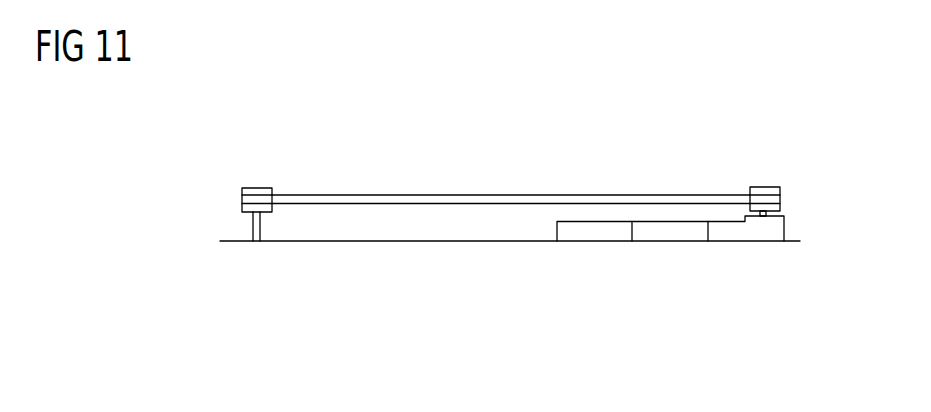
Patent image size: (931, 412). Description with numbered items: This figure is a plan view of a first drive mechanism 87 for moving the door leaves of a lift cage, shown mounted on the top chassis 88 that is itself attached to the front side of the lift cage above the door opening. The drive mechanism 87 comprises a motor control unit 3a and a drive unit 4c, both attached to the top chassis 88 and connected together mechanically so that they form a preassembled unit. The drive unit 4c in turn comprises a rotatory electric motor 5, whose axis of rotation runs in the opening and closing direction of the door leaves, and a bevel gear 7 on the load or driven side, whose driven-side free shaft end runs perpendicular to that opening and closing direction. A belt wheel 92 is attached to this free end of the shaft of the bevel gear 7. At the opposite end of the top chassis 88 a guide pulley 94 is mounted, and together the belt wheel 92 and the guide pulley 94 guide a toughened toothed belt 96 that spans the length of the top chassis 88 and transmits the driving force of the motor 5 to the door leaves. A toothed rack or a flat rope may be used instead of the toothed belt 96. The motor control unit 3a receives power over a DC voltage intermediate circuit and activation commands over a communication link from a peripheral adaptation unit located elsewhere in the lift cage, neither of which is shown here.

The top chassis 88 is at (458, 236).
The guide pulley 94 is at (242, 190).
The toothed belt 96 is at (372, 194).
The belt wheel 92 is at (780, 187).
The motor control unit 3a is at (595, 233).
The rotatory electric motor 5 is at (668, 233).
The bevel gear 7 is at (748, 233).
The drive mechanism 87 is at (712, 151).
The drive unit 4c is at (632, 314).